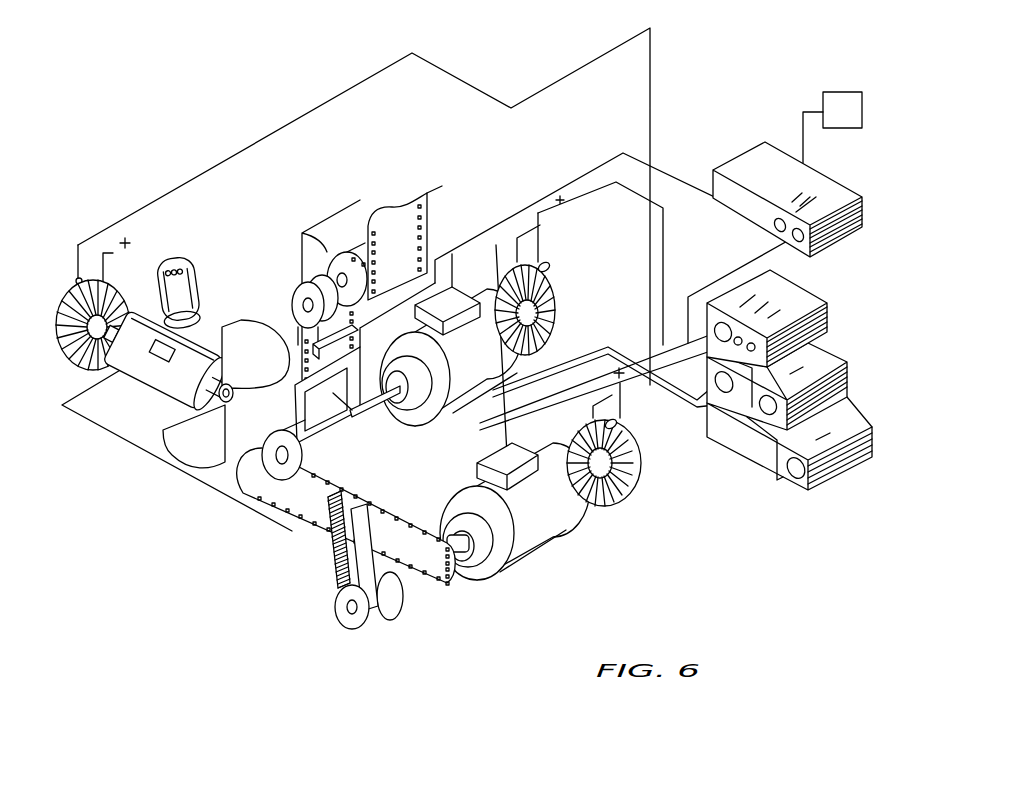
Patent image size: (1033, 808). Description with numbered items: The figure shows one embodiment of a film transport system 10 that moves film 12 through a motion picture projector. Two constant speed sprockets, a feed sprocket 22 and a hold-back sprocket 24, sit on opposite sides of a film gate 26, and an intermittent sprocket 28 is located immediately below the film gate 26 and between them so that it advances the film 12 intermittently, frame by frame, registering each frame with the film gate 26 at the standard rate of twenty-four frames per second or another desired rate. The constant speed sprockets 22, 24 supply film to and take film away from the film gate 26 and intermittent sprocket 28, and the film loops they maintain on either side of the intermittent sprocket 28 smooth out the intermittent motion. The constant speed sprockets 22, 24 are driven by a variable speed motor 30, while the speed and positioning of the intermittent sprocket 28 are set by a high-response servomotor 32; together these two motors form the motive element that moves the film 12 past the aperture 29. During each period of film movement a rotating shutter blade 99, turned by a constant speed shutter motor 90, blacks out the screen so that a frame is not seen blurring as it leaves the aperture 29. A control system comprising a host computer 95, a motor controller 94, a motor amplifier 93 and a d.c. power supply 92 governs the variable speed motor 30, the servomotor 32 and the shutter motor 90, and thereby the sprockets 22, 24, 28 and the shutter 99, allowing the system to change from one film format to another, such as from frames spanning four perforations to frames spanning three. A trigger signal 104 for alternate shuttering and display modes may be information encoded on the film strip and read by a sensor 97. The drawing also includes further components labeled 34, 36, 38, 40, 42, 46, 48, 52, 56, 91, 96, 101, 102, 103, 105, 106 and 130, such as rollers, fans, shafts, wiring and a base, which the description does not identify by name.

The film transport system 10 is at (140, 157).
The film 12 is at (402, 207).
The feed sprocket 22 is at (331, 222).
The hold-back sprocket 24 is at (395, 604).
The film gate 26 is at (295, 413).
The intermittent sprocket 28 is at (273, 436).
The aperture 29 is at (357, 437).
The variable speed motor 30 is at (537, 563).
The servomotor 32 is at (430, 420).
The motor shaft 34 is at (463, 547).
The roller 36 is at (347, 614).
The tractor feed 38 is at (332, 568).
The roller 40 is at (293, 309).
The pulley 42 is at (293, 236).
The fan 46 is at (600, 507).
The drive shaft 48 is at (380, 397).
The fan 52 is at (508, 277).
The perforated web 56 is at (422, 237).
The shutter motor 90 is at (157, 398).
The fan 91 is at (65, 310).
The d.c. power supply 92 is at (818, 490).
The motor amplifier 93 is at (893, 398).
The motor controller 94 is at (828, 316).
The host computer 95 is at (855, 235).
The capacitor 96 is at (167, 260).
The sensor 97 is at (352, 337).
The shutter blade 99 is at (190, 450).
The wire 101 is at (275, 135).
The cable 102 is at (535, 383).
The wire 103 is at (652, 272).
The trigger signal 104 is at (522, 213).
The cable 105 is at (548, 400).
The base platform 106 is at (233, 503).
The switch 130 is at (843, 130).